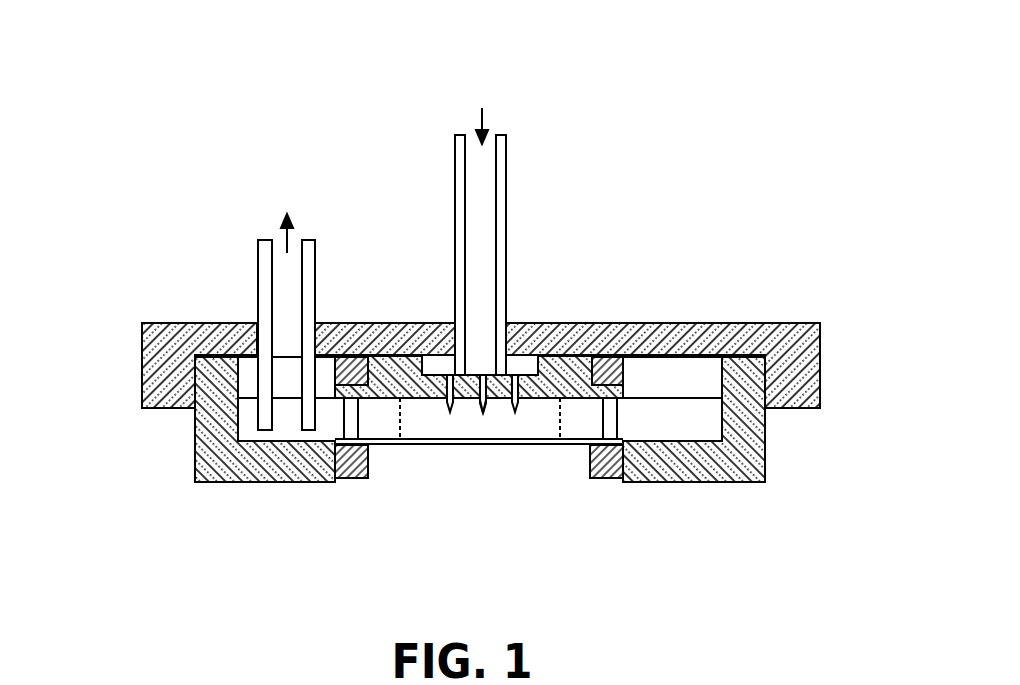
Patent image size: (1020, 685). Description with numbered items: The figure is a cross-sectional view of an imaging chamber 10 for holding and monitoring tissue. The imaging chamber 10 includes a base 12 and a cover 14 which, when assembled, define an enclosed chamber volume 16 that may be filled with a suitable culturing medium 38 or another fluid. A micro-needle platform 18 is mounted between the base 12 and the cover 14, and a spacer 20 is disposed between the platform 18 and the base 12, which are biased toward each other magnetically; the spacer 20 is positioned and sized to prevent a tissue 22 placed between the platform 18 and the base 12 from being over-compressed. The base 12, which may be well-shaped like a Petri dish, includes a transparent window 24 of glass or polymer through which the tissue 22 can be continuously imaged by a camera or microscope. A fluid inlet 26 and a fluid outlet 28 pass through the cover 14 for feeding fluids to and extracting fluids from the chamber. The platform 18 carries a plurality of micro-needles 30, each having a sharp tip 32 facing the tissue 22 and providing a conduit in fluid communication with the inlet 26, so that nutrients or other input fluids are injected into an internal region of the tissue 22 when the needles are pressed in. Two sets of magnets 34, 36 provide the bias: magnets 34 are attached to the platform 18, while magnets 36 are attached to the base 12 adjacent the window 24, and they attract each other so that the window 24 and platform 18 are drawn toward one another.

The imaging chamber 10 is at (694, 93).
The base 12 is at (177, 453).
The cover 14 is at (127, 359).
The enclosed chamber volume 16 is at (685, 377).
The micro-needle platform 18 is at (402, 353).
The spacer 20 is at (352, 420).
The tissue 22 is at (423, 426).
The transparent window 24 is at (520, 446).
The fluid inlet 26 is at (455, 178).
The fluid outlet 28 is at (258, 278).
The micro-needles 30 is at (483, 375).
The sharp tip 32 is at (487, 408).
The magnets 34 is at (612, 350).
The magnets 36 is at (607, 482).
The culturing medium 38 is at (655, 415).